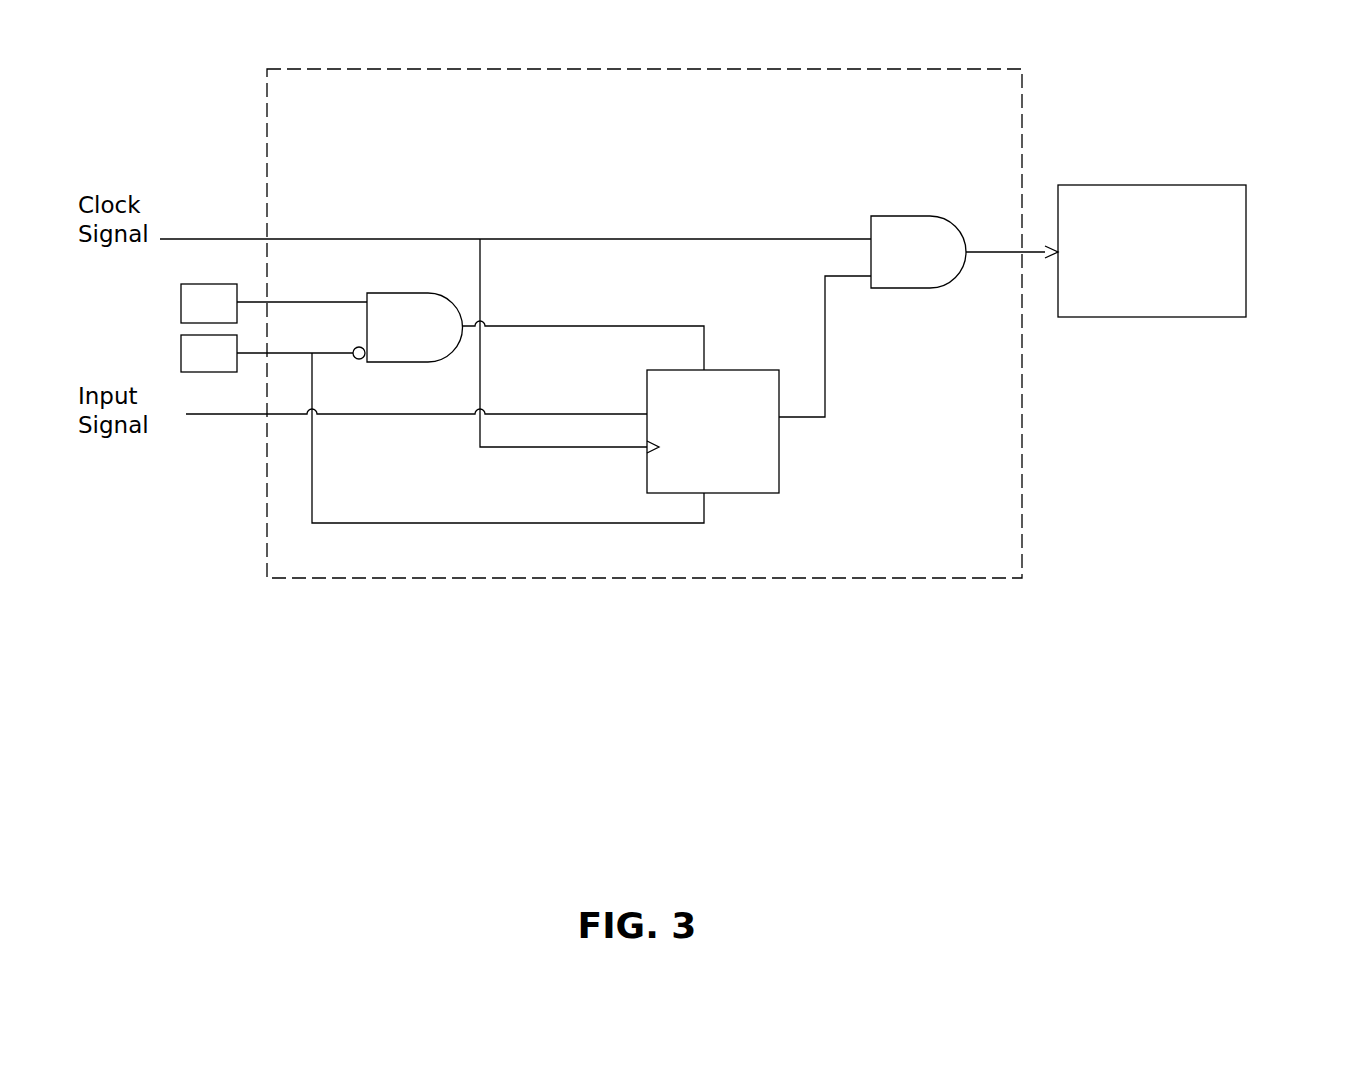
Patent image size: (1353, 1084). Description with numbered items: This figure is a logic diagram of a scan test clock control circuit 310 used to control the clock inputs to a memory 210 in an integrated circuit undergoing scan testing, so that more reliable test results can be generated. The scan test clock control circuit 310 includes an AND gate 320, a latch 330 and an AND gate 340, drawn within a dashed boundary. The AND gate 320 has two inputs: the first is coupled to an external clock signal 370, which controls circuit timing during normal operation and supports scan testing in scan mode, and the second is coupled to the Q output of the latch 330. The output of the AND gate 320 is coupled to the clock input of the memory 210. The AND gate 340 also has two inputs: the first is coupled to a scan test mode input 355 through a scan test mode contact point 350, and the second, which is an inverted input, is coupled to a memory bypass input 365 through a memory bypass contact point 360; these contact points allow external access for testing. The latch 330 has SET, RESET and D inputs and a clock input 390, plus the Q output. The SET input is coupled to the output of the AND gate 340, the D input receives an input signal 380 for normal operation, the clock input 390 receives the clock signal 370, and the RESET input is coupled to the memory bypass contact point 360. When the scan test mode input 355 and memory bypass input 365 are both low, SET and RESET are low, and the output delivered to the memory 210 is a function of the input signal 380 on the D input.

The memory 210 is at (1246, 213).
The scan test clock control circuit 310 is at (1020, 108).
The AND gate 320 is at (910, 216).
The latch 330 is at (779, 460).
The AND gate 340 is at (385, 293).
The scan test mode contact point 350 is at (181, 302).
The memory bypass contact point 360 is at (181, 353).
The scan test mode input 355 is at (300, 302).
The memory bypass input 365 is at (327, 353).
The clock signal 370 is at (212, 239).
The input signal 380 is at (203, 417).
The clock input 390 is at (602, 448).